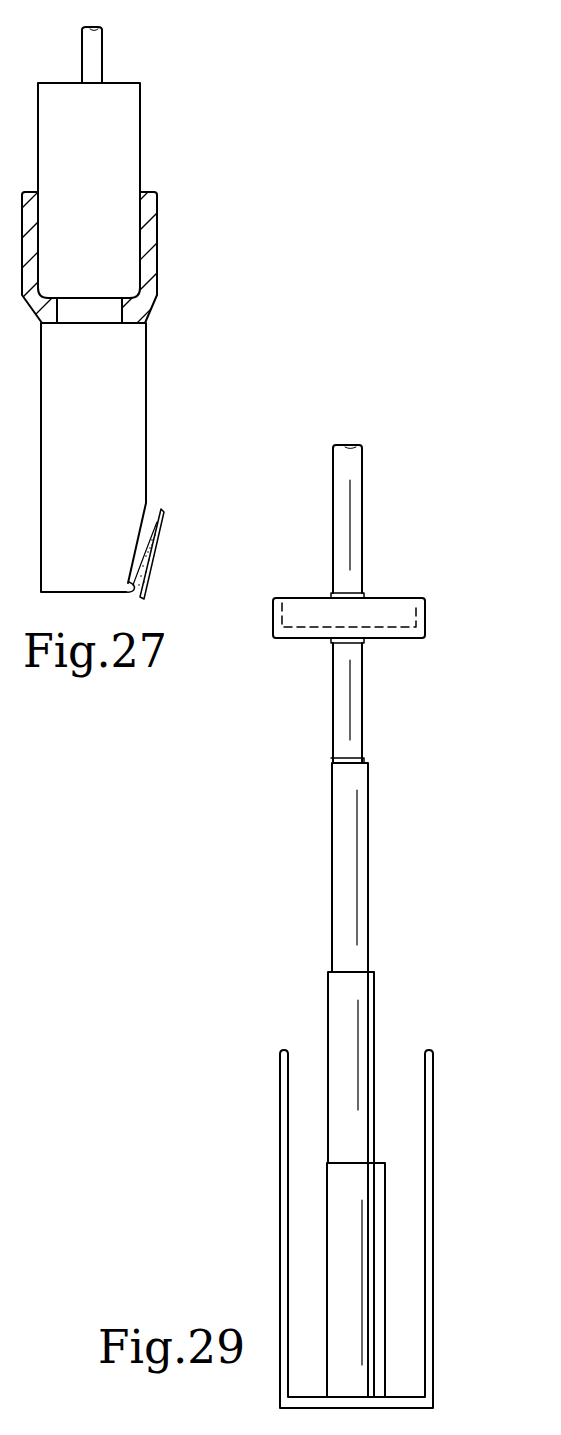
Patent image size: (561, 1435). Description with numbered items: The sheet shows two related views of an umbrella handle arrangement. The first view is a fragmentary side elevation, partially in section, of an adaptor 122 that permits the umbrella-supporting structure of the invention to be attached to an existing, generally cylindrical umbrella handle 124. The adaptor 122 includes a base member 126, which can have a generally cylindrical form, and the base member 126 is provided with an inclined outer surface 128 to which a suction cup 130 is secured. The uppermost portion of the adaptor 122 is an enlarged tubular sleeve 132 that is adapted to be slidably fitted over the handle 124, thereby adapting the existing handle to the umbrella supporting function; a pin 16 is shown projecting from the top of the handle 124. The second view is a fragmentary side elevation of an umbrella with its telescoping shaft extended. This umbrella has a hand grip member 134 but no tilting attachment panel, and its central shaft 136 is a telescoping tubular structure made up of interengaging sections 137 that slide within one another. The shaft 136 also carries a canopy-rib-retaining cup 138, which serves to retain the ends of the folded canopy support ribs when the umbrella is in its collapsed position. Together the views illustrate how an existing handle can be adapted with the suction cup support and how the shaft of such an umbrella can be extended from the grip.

In FIG. 27, the pin 16 is at (93, 58).
In FIG. 27, the umbrella handle 124 is at (125, 117).
In FIG. 27, the tubular sleeve 132 is at (157, 238).
In FIG. 27, the base member 126 is at (136, 345).
In FIG. 27, the adaptor 122 is at (159, 394).
In FIG. 27, the suction cup 130 is at (168, 533).
In FIG. 27, the inclined outer surface 128 is at (133, 591).
In FIG. 29, the central shaft 136 is at (361, 558).
In FIG. 29, the canopy-rib-retaining cup 138 is at (425, 615).
In FIG. 29, the interengaging sections 137 is at (371, 990).
In FIG. 29, the hand grip member 134 is at (433, 1142).